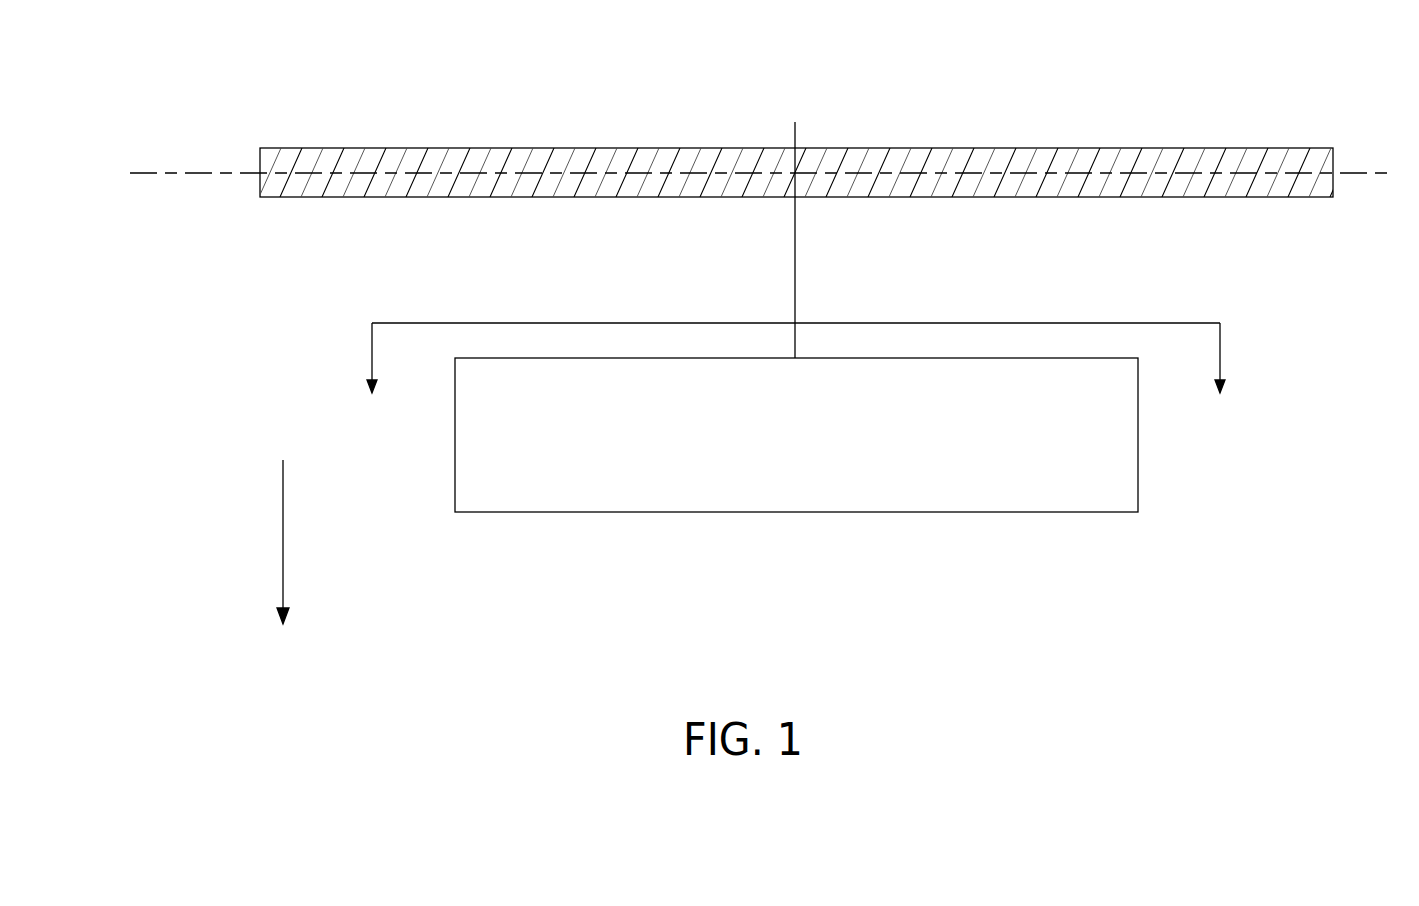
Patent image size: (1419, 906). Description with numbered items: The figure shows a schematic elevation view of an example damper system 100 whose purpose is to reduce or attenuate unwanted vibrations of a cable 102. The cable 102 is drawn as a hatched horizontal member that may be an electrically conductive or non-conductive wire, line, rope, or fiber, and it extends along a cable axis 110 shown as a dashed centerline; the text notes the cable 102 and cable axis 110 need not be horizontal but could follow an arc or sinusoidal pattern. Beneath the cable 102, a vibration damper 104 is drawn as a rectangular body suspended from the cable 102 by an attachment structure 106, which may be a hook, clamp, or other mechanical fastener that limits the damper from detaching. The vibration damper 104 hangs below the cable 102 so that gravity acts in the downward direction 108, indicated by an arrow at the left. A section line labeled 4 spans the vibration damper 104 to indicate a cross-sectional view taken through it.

The damper system 100 is at (337, 97).
The cable 102 is at (996, 149).
The vibration damper 104 is at (1035, 513).
The attachment structure 106 is at (798, 293).
The downward direction 108 is at (283, 543).
The cable axis 110 is at (203, 173).
The section line 4- 4 is at (797, 382).